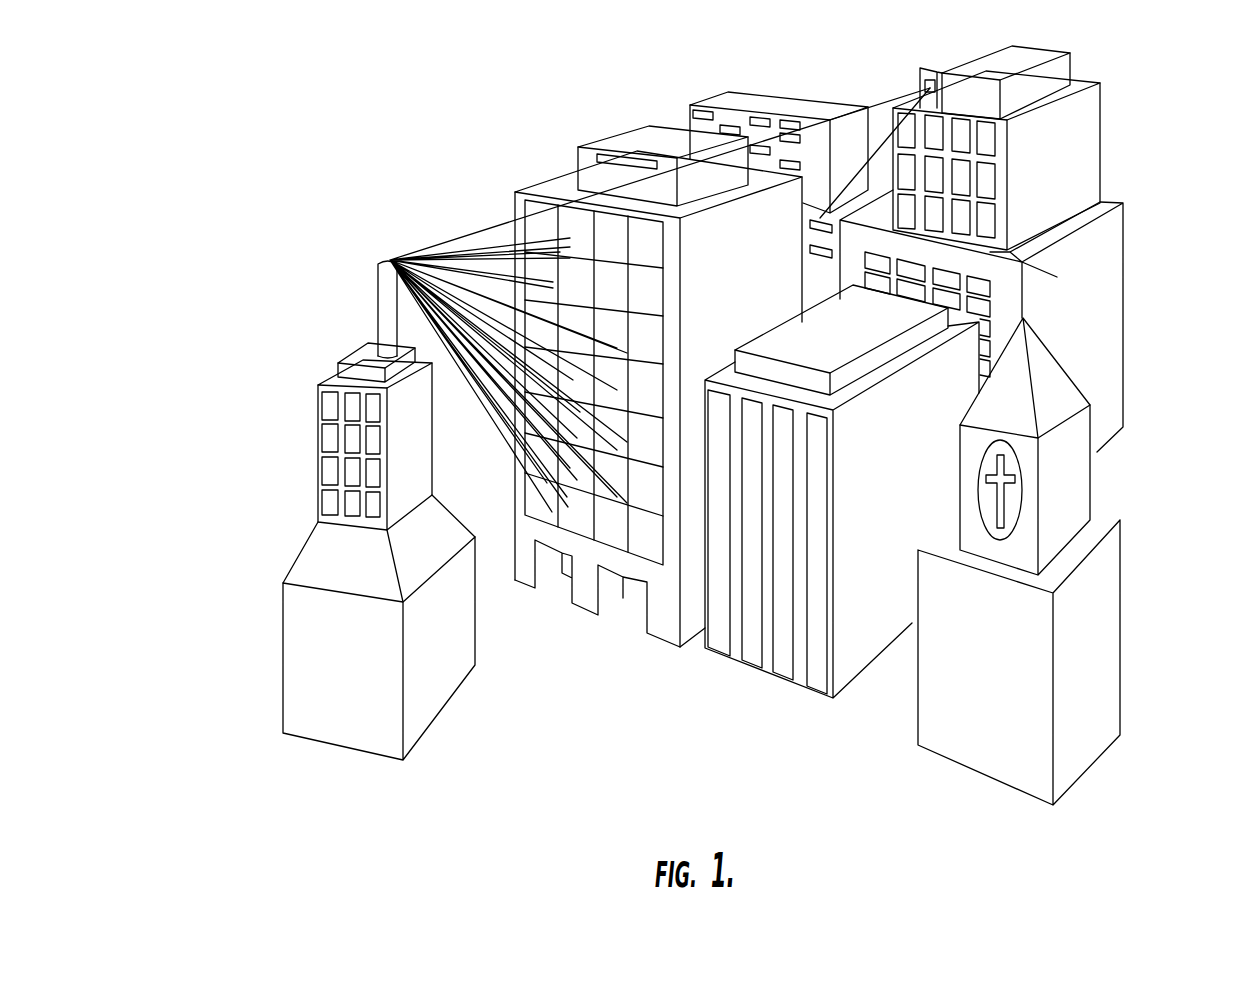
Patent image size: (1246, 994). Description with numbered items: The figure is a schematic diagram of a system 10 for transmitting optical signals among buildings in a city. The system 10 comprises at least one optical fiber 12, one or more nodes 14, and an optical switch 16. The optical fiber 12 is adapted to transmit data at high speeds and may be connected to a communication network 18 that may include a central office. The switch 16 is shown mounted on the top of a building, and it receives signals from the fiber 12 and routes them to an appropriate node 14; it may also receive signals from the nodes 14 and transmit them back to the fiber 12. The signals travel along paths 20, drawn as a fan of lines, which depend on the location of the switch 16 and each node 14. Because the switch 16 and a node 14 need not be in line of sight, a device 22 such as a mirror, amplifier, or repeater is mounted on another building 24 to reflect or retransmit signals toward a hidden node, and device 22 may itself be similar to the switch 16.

The system for transmitting optical signals 10 is at (215, 128).
The optical fiber 12 is at (313, 397).
The node 14 is at (525, 191).
The optical switch 16 is at (378, 278).
The communication network 18 is at (263, 766).
The path 20 is at (452, 217).
The device 22 is at (944, 72).
The building 24 is at (1124, 262).